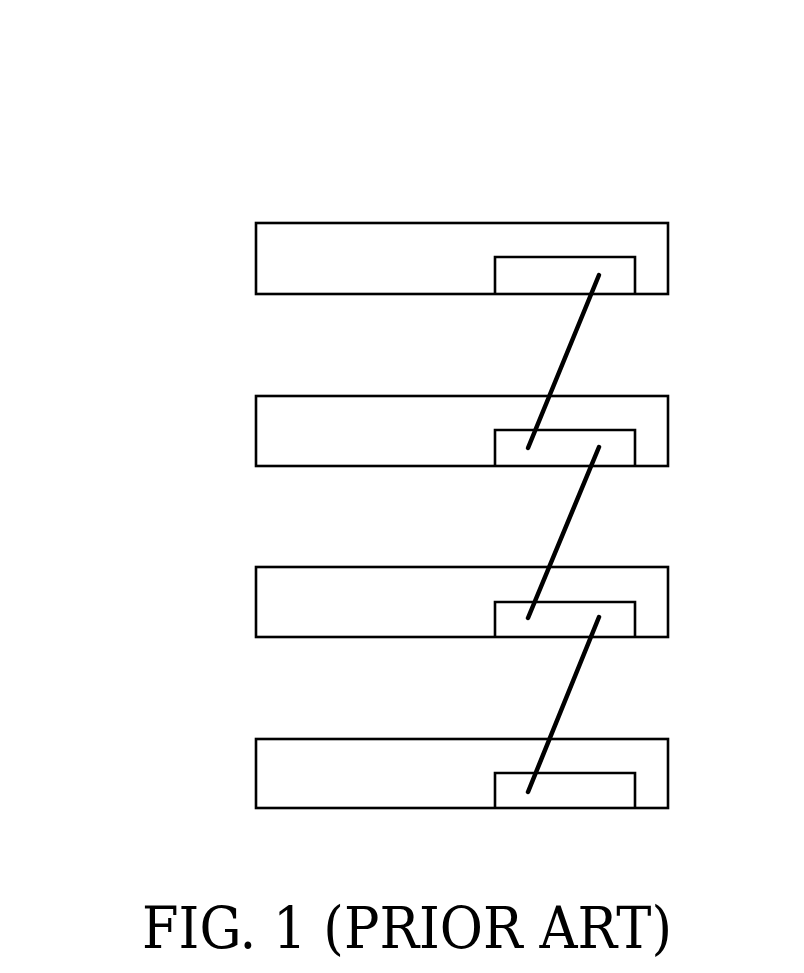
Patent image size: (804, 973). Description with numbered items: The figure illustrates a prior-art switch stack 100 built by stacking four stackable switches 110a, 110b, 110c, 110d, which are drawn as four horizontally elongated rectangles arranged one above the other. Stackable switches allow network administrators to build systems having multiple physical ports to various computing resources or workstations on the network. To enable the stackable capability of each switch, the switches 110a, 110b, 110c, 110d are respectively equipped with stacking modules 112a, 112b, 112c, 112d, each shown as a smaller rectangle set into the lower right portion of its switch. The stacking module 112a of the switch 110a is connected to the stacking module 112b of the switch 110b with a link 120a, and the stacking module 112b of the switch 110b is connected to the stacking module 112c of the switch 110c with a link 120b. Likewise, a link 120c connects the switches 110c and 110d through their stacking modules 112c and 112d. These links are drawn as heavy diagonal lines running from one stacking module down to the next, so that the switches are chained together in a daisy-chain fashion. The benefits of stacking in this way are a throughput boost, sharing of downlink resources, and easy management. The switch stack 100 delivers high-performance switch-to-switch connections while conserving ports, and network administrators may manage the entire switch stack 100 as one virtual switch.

The switch stack 100 is at (253, 75).
The switch 110a is at (256, 260).
The switch 110b is at (256, 432).
The switch 110c is at (256, 602).
The switch 110d is at (256, 775).
The stacking module 112a is at (517, 257).
The stacking module 112b is at (517, 430).
The stacking module 112c is at (517, 602).
The stacking module 112d is at (517, 773).
The link 120a is at (573, 347).
The link 120b is at (573, 517).
The link 120c is at (573, 685).